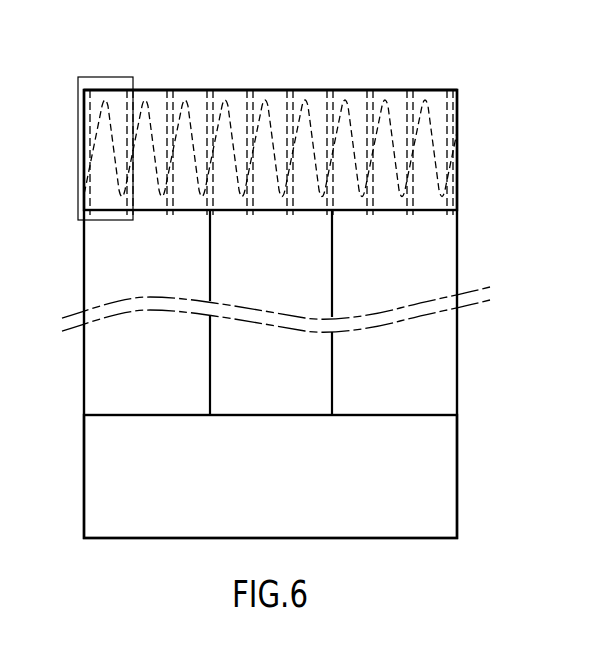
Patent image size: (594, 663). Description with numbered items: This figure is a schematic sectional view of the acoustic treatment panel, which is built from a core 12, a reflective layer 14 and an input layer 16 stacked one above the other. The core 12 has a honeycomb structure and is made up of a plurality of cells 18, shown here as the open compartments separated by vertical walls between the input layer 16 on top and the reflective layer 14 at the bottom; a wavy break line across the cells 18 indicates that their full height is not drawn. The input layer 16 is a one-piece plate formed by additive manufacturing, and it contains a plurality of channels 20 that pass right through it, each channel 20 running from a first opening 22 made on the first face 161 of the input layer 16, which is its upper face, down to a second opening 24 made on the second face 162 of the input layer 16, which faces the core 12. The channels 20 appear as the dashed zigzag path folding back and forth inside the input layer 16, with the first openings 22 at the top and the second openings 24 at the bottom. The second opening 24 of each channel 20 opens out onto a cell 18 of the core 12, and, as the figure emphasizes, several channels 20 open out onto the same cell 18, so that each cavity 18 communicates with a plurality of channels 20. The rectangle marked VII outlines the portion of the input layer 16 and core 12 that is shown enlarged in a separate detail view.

The core 12 is at (460, 392).
The reflective layer 14 is at (440, 495).
The input layer 16 is at (275, 147).
The first face 161 is at (311, 86).
The second face 162 is at (431, 222).
The cell 18 is at (440, 278).
The channel 20 is at (182, 107).
The first opening 22 is at (207, 88).
The second opening 24 is at (178, 213).
The detail view VII region VII is at (78, 148).